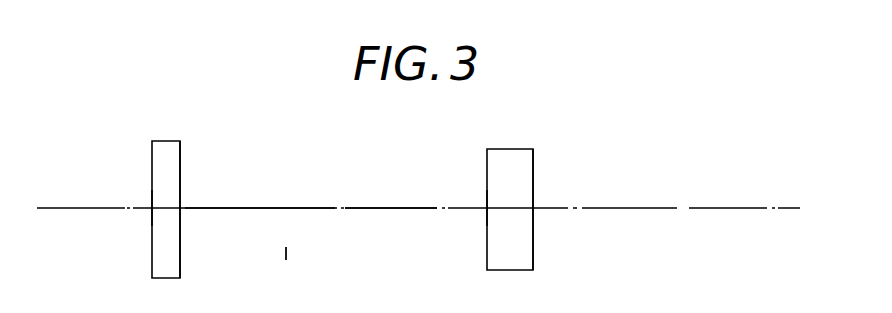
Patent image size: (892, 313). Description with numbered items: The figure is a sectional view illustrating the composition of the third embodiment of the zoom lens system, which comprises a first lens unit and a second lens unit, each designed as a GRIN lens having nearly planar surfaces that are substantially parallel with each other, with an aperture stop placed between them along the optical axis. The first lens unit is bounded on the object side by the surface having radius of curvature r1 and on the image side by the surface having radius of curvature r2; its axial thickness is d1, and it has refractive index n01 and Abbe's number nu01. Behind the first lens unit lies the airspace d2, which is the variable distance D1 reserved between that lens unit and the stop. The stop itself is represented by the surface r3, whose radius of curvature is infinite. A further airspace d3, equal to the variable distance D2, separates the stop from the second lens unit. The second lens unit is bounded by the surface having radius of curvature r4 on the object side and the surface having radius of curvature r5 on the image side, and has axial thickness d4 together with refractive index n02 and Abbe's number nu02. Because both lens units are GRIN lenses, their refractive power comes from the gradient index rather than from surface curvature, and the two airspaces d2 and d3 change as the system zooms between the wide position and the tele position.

The radius of curvature of first surface r1 is at (152, 250).
The radius of curvature of second surface r2 is at (180, 257).
The stop surface r3 is at (287, 253).
The radius of curvature of fourth surface r4 is at (487, 243).
The radius of curvature of fifth surface r5 is at (533, 253).
The thickness of first lens element d1 is at (163, 207).
The airspace between first lens unit and stop d2 is at (238, 207).
The airspace between stop and second lens unit d3 is at (377, 206).
The thickness of second lens element d4 is at (517, 205).